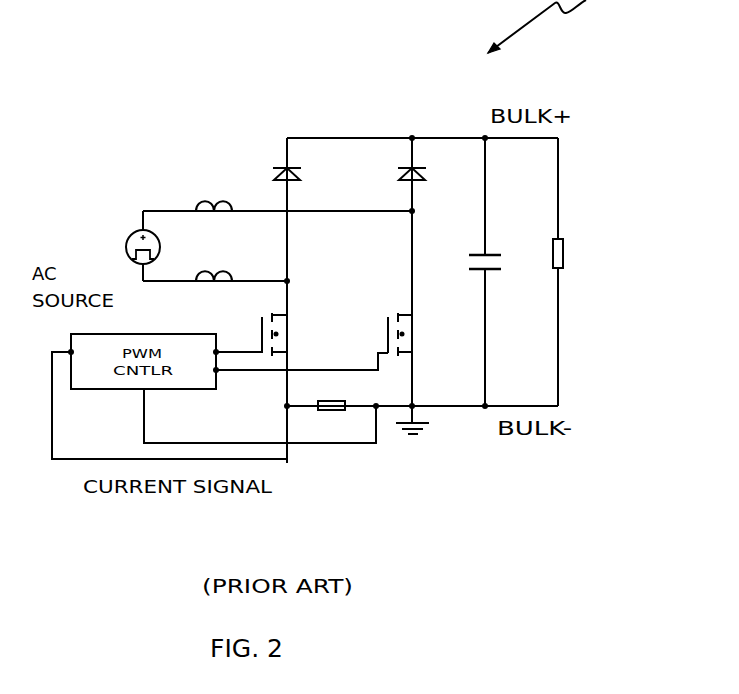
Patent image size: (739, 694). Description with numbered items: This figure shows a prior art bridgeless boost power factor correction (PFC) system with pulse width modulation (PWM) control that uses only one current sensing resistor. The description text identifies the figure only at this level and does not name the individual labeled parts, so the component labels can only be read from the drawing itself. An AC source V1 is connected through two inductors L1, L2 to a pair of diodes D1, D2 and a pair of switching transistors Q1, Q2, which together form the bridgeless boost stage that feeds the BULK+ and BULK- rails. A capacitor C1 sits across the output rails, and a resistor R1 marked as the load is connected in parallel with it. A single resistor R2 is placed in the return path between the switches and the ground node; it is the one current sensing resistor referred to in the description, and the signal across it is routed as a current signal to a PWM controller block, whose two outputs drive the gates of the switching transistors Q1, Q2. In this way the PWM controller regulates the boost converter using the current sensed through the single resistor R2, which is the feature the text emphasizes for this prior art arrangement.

The AC source V1 is at (126, 247).
The inductor L1 is at (214, 221).
The inductor L2 is at (214, 292).
The diode D1 is at (301, 167).
The diode D2 is at (429, 167).
The MOSFET switch Q1 is at (291, 334).
The MOSFET switch Q2 is at (419, 334).
The bulk capacitor C1 is at (498, 255).
The load resistor R1 is at (593, 253).
The current sense resistor R2 is at (333, 418).